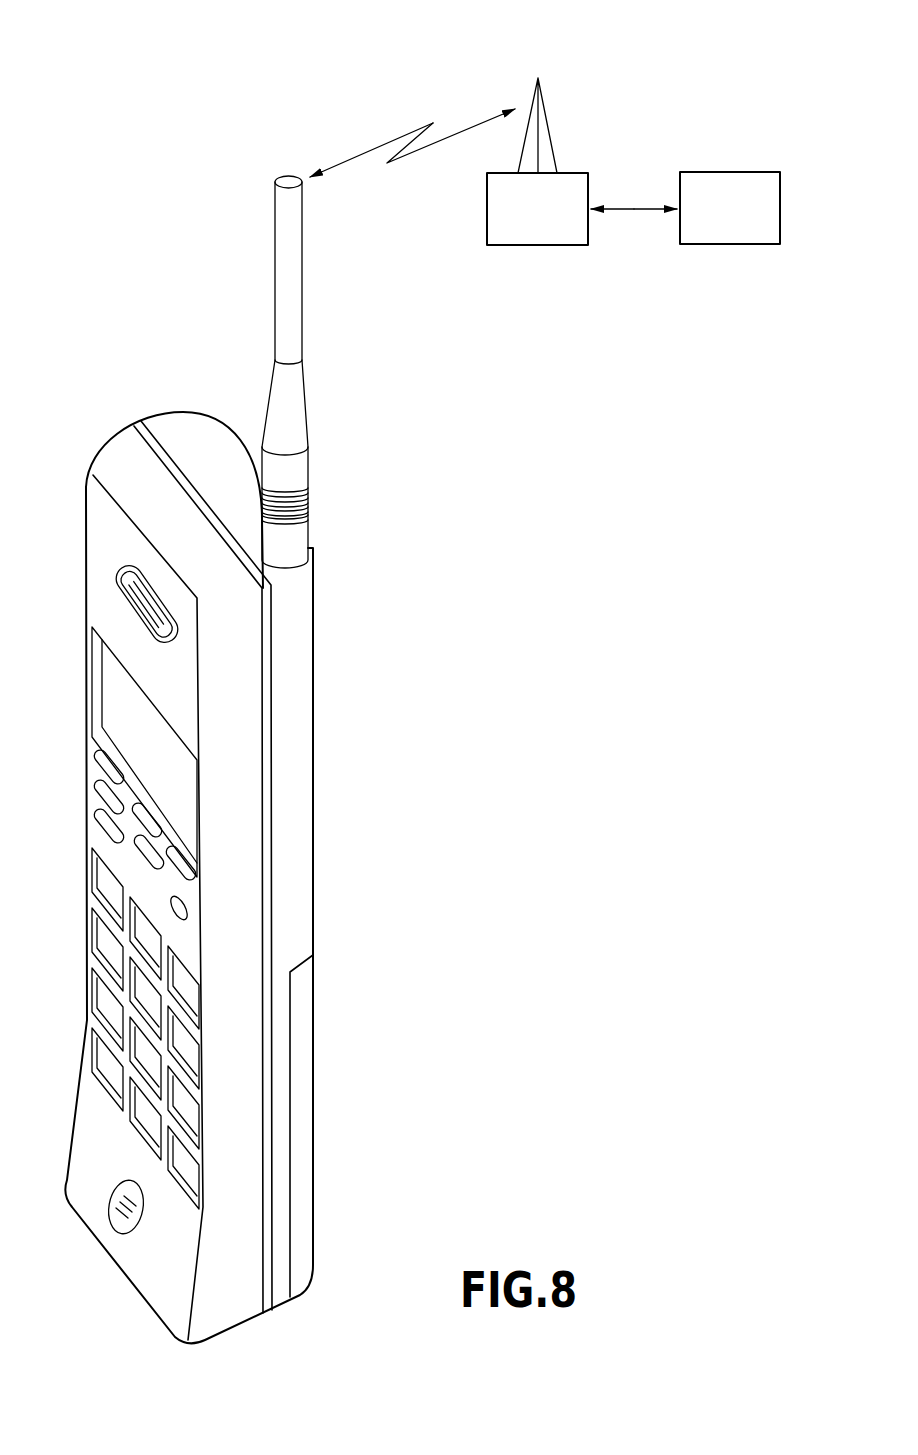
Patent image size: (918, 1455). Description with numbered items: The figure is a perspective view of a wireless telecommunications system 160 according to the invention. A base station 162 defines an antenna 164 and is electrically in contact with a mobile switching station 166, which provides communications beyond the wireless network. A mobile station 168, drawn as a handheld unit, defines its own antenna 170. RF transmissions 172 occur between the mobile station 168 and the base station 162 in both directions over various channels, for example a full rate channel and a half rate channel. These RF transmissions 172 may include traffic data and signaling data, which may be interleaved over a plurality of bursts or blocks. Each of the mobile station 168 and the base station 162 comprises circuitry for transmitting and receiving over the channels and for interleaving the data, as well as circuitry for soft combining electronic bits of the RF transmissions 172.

The wireless telecommunications system 160 is at (372, 92).
The base station 162 is at (540, 246).
The antenna 164 is at (540, 80).
The mobile switching station 166 is at (700, 245).
The mobile station 168 is at (292, 665).
The antenna 170 is at (280, 257).
The RF transmissions 172 is at (414, 175).